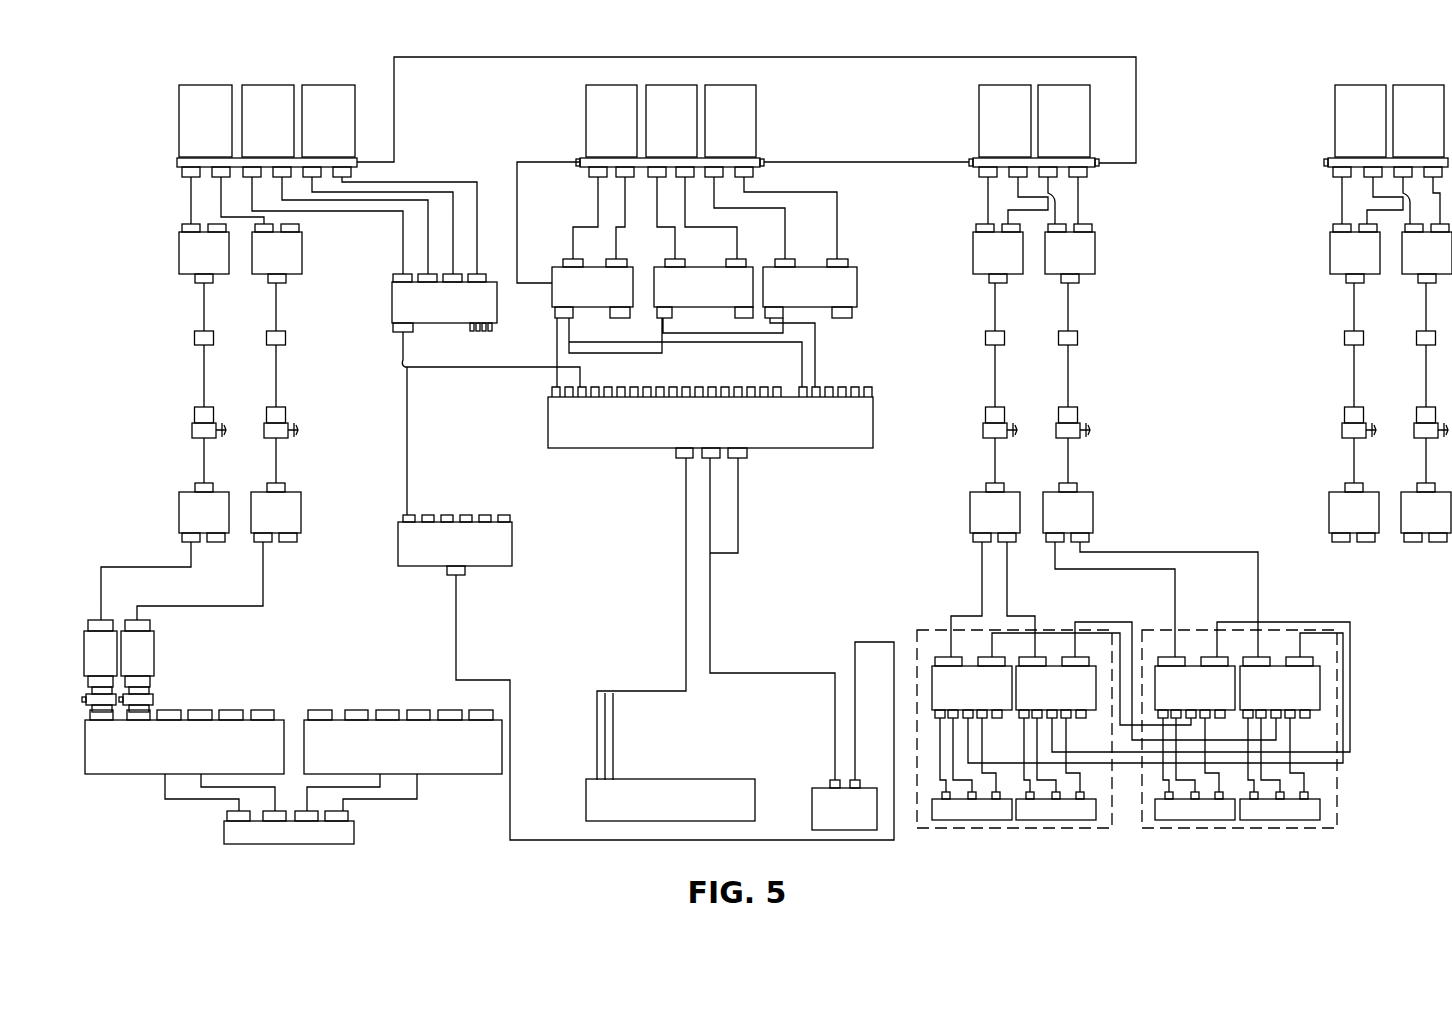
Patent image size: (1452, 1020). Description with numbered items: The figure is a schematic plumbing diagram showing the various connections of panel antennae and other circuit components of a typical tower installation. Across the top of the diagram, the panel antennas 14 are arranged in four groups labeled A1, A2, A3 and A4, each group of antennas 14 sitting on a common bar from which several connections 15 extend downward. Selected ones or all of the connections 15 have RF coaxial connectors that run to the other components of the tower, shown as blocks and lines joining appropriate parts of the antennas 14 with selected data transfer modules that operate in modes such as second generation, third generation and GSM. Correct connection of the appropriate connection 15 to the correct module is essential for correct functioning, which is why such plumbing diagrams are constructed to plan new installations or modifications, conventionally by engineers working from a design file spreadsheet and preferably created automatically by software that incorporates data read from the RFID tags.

The panel antenna 14 is at (258, 93).
The connections 15 is at (180, 172).
The first subsystem A1 is at (609, 433).
The second subsystem A2 is at (743, 426).
The third subsystem A3 is at (1133, 425).
The fourth subsystem A4 is at (1390, 282).